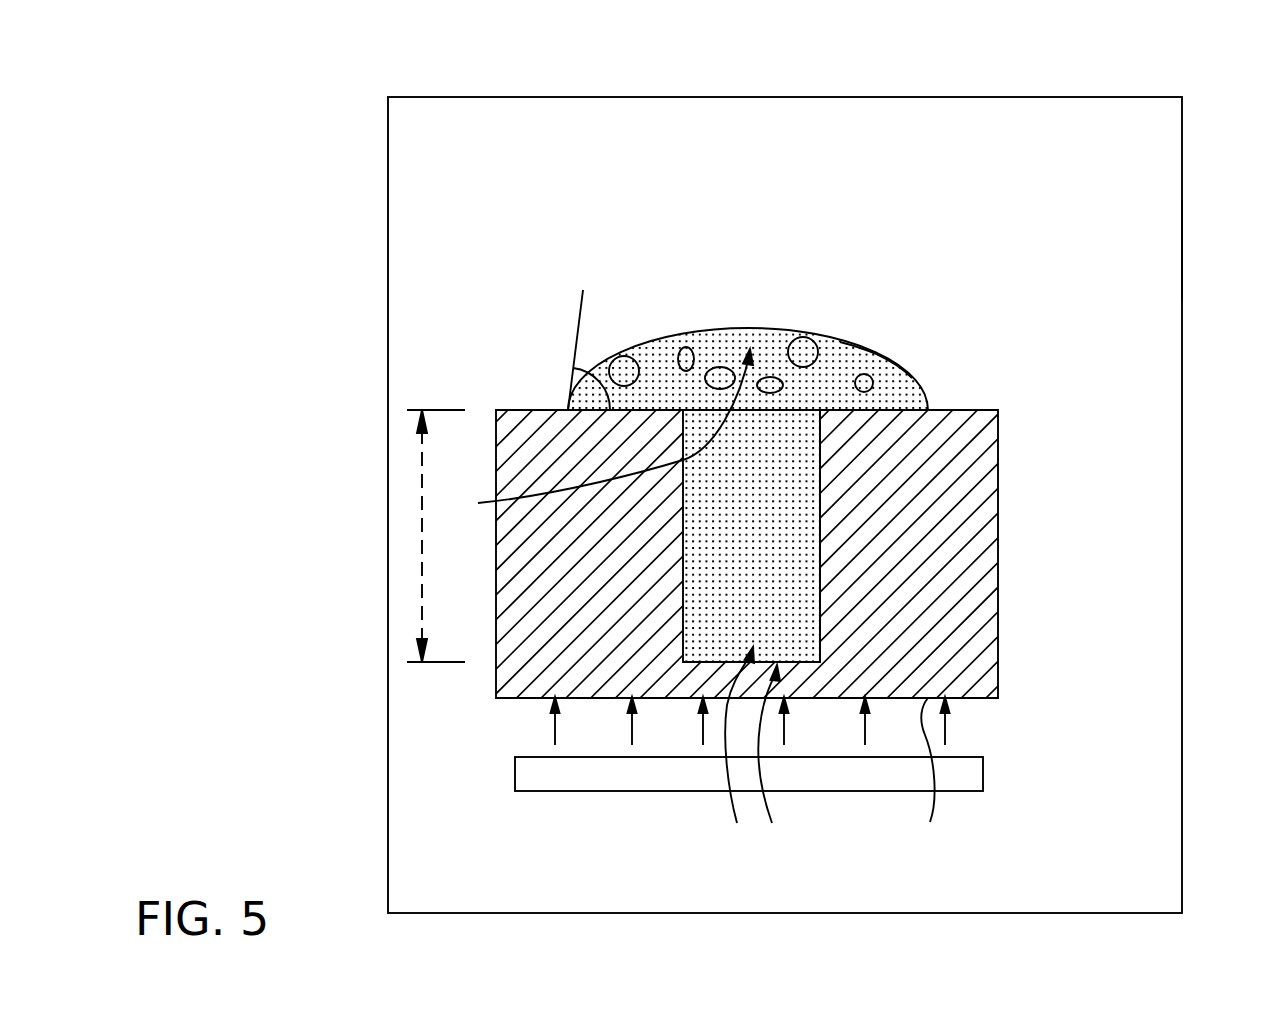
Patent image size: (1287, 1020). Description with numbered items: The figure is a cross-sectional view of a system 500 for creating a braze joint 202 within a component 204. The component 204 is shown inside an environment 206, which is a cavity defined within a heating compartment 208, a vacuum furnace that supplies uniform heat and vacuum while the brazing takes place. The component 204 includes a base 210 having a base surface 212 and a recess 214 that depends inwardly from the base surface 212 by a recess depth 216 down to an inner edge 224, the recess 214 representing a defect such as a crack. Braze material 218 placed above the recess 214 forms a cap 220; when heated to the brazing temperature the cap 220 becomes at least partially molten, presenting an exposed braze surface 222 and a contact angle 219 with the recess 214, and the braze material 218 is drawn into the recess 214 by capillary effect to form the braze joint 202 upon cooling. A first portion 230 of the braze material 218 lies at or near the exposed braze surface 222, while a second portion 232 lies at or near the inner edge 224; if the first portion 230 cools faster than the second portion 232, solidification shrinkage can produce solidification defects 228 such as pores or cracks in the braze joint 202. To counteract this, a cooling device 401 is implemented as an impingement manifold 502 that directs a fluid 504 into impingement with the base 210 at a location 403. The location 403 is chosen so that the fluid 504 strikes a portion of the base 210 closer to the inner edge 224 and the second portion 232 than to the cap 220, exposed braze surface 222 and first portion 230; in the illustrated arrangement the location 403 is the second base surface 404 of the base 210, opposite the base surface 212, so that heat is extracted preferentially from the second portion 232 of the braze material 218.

The system 500 is at (1068, 72).
The environment 206 is at (1071, 207).
The heating compartment 208 is at (1182, 248).
The component 204 is at (1060, 318).
The solidification defects 228 is at (624, 371).
The contact angle 219 is at (617, 358).
The cap 220 is at (866, 365).
The exposed braze surface 222 is at (889, 350).
The base surface 212 is at (985, 410).
The base 210 is at (1000, 503).
The first portion 230 is at (590, 434).
The recess depth 216 is at (420, 567).
The braze joint 202 is at (822, 556).
The recess 214 is at (820, 602).
The fluid 504 is at (553, 722).
The cooling device 401 is at (736, 807).
The impingement manifold 502 is at (547, 792).
The braze material 218 is at (703, 640).
The second portion 232 is at (733, 754).
The inner edge 224 is at (787, 761).
The location 403 is at (958, 777).
The second base surface 404 is at (958, 777).